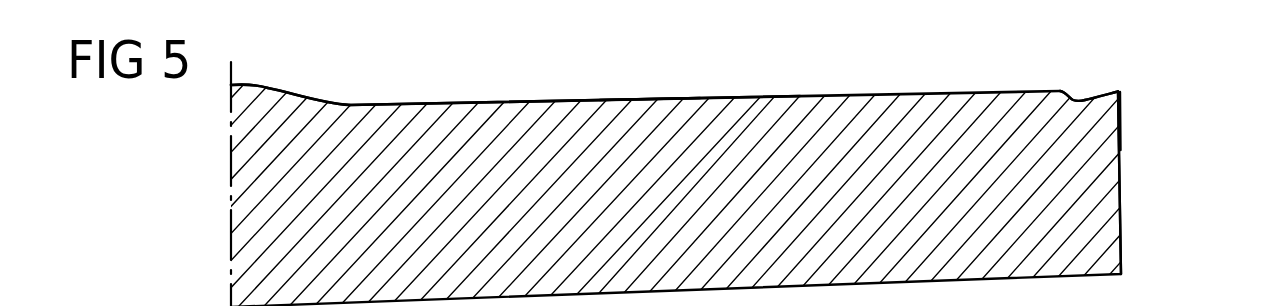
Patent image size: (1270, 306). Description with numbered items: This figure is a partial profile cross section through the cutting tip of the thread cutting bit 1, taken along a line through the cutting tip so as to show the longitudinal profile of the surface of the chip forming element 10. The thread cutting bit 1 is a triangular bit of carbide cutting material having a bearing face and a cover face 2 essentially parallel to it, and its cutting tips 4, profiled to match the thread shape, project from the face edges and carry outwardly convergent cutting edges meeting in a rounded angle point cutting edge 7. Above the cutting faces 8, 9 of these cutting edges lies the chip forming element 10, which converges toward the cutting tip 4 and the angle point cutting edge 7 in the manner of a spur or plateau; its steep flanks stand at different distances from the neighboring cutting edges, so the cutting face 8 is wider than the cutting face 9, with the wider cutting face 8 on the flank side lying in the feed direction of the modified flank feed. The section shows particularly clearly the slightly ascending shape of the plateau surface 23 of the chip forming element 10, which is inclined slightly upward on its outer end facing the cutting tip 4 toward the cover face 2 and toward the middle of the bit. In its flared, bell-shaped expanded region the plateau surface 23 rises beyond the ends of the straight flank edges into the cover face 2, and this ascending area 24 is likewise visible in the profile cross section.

The thread cutting bit 1 is at (485, 112).
The cover face 2 is at (257, 84).
The cutting tip 4 is at (1135, 88).
The angle point cutting edge 7 is at (1120, 90).
The cutting face 8 is at (1079, 96).
The cutting face 9 is at (1092, 53).
The chip forming element 10 is at (733, 143).
The plateau surface 23 is at (633, 97).
The ascending area 24 is at (286, 96).